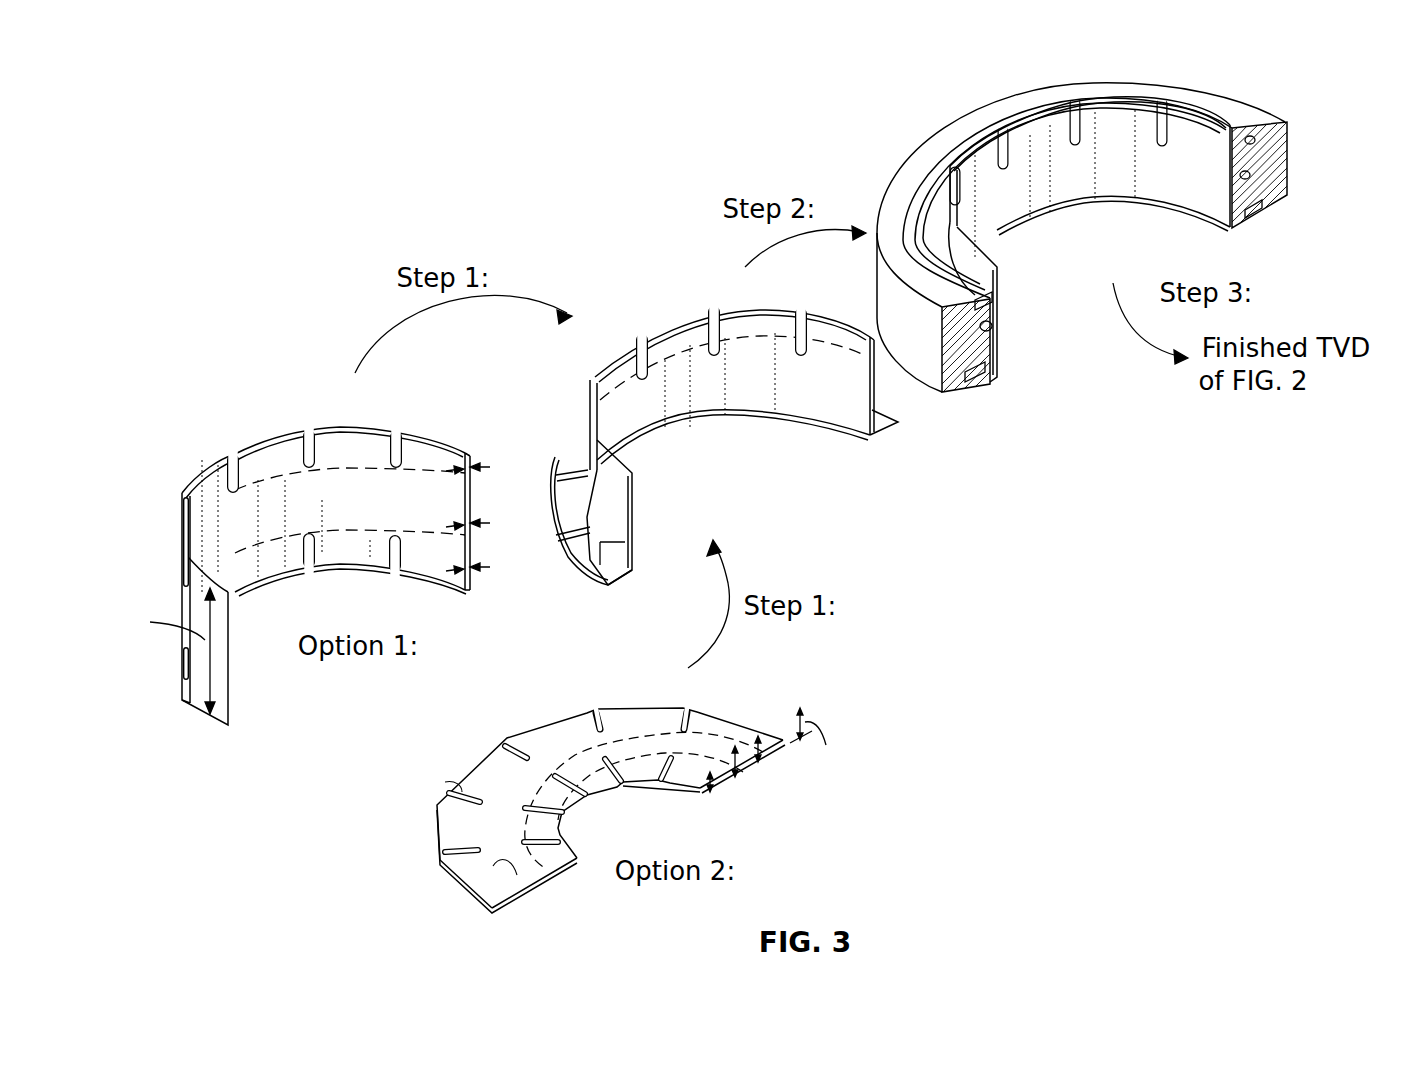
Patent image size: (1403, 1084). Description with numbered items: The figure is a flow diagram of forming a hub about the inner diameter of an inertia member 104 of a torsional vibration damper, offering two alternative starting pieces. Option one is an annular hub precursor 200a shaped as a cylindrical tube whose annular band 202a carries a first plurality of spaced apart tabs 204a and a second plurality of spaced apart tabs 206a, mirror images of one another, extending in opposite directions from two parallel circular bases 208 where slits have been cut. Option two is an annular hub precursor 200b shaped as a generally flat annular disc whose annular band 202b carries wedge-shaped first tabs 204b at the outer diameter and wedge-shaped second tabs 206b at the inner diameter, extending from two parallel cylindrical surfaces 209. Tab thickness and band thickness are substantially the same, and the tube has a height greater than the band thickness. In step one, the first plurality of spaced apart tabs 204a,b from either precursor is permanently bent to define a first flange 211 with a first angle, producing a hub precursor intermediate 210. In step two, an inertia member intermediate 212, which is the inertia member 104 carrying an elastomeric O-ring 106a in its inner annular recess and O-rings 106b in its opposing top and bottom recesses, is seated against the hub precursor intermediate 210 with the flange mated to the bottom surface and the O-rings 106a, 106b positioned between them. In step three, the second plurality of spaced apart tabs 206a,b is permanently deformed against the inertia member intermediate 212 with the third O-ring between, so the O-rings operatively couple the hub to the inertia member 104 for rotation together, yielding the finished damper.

The inertia member 104 is at (906, 175).
The elastomeric O-ring 106a is at (1000, 330).
The elastomeric O-ring 106b is at (1000, 300).
The annular hub precursor 200a is at (213, 358).
The annular hub precursor 200b is at (553, 694).
The annular band 202a is at (383, 430).
The annular band 202b is at (482, 885).
The first plurality of spaced apart tabs 204a is at (415, 568).
The first plurality of spaced apart tabs 204b is at (450, 799).
The first plurality of spaced apart tabs 204a,b is at (556, 468).
The second plurality of spaced apart tabs 206a is at (320, 440).
The second plurality of spaced apart tabs 206b is at (688, 742).
The second plurality of spaced apart tabs 206a,b is at (722, 322).
The parallel circular bases 208 is at (186, 525).
The parallel cylindrical surfaces 209 is at (510, 777).
The hub precursor intermediate 210 is at (609, 238).
The first flange 211 is at (600, 590).
The inertia member intermediate 212 is at (1297, 155).